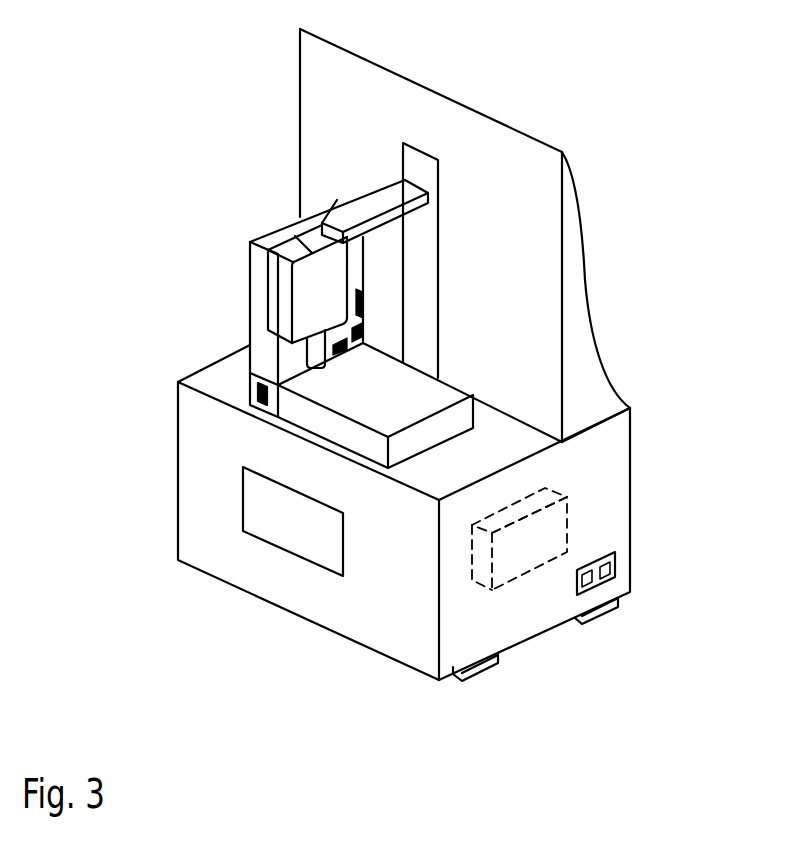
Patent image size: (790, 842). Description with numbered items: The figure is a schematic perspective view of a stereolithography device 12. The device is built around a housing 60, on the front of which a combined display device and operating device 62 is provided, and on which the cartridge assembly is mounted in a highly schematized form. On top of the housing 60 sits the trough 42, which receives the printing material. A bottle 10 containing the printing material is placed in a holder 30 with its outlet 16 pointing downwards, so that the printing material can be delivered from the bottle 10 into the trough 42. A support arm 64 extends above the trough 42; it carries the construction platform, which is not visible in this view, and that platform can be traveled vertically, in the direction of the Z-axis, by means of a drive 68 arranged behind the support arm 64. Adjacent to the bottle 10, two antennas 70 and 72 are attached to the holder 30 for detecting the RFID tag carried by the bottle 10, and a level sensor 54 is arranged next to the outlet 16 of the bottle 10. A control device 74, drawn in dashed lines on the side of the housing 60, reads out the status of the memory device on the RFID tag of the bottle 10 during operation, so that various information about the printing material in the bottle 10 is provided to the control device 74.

The bottle 10 is at (287, 293).
The stereolithography device 12 is at (637, 138).
The outlet 16 is at (313, 358).
The holder 30 is at (317, 279).
The trough 42 is at (413, 395).
The level sensor 54 is at (365, 328).
The housing 60 is at (412, 642).
The combined display device and operating device 62 is at (290, 522).
The support arm 64 is at (388, 197).
The drive 68 is at (422, 230).
The antenna 70 is at (365, 300).
The antenna 72 is at (348, 350).
The control device 74 is at (543, 533).